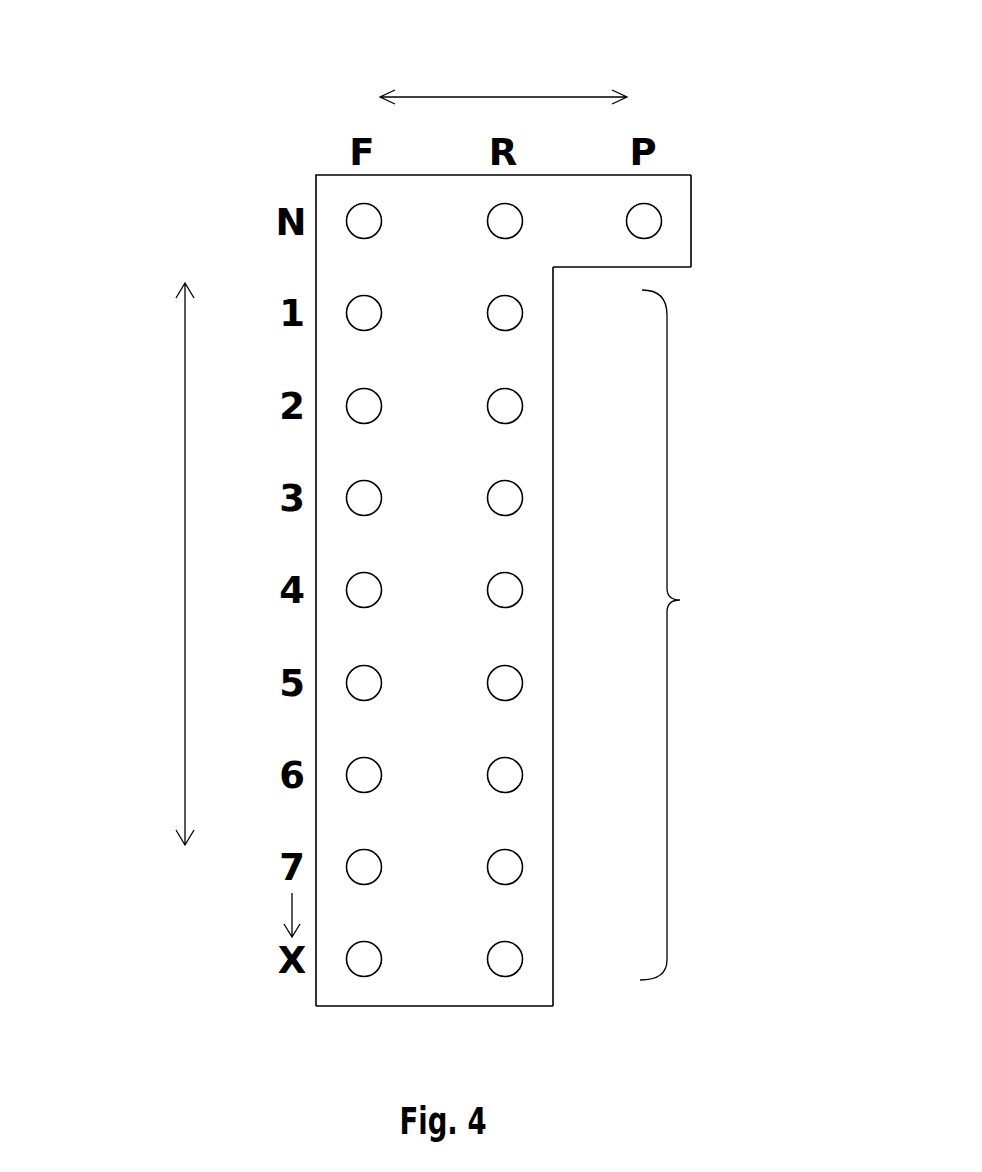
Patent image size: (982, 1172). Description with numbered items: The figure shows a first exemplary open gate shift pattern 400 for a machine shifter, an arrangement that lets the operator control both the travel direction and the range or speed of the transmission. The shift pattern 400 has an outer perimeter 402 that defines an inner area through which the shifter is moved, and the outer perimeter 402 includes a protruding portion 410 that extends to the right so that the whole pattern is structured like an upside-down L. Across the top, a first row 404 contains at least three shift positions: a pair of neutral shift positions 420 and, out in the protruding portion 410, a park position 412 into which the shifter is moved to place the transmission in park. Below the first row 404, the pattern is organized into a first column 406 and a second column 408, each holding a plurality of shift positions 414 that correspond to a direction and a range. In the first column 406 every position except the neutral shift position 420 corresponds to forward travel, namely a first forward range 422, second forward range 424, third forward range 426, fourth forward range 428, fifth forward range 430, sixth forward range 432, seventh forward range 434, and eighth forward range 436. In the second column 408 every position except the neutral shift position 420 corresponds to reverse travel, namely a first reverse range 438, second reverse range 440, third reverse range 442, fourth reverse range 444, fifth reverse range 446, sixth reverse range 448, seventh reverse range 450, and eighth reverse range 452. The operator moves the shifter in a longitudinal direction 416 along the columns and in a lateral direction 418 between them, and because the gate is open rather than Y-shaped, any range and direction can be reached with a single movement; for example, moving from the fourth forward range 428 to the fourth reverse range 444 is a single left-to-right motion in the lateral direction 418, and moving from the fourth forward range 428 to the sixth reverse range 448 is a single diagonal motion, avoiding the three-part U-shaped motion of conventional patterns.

The shift pattern 400 is at (144, 134).
The outer perimeter 402 is at (325, 175).
The first row 404 is at (700, 197).
The first column 406 is at (355, 1021).
The second column 408 is at (513, 1020).
The protruding portion 410 is at (660, 273).
The park position 412 is at (652, 219).
The shift positions 414 is at (684, 635).
The longitudinal direction 416 is at (185, 578).
The lateral direction 418 is at (500, 96).
The neutral shift positions 420 is at (371, 216).
The first forward range 422 is at (352, 306).
The second forward range 424 is at (352, 399).
The third forward range 426 is at (353, 493).
The fourth forward range 428 is at (352, 585).
The fifth forward range 430 is at (352, 678).
The sixth forward range 432 is at (352, 770).
The seventh forward range 434 is at (352, 862).
The eighth forward range 436 is at (357, 965).
The first reverse range 438 is at (512, 316).
The second reverse range 440 is at (512, 409).
The third reverse range 442 is at (512, 501).
The fourth reverse range 444 is at (512, 593).
The fifth reverse range 446 is at (512, 686).
The sixth reverse range 448 is at (512, 778).
The seventh reverse range 450 is at (512, 870).
The eighth reverse range 452 is at (512, 961).